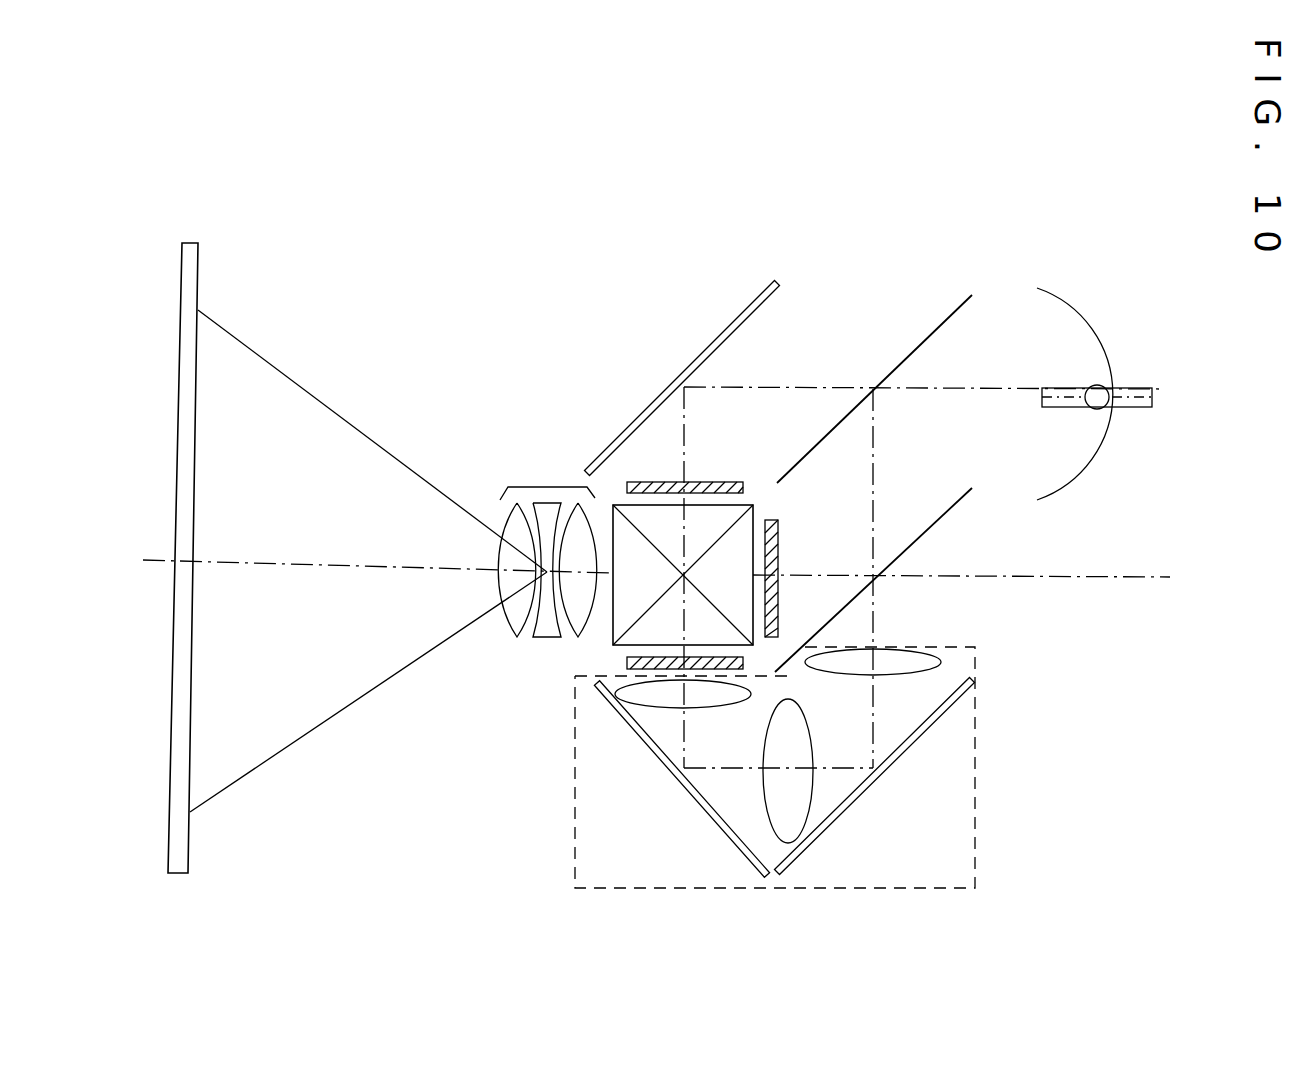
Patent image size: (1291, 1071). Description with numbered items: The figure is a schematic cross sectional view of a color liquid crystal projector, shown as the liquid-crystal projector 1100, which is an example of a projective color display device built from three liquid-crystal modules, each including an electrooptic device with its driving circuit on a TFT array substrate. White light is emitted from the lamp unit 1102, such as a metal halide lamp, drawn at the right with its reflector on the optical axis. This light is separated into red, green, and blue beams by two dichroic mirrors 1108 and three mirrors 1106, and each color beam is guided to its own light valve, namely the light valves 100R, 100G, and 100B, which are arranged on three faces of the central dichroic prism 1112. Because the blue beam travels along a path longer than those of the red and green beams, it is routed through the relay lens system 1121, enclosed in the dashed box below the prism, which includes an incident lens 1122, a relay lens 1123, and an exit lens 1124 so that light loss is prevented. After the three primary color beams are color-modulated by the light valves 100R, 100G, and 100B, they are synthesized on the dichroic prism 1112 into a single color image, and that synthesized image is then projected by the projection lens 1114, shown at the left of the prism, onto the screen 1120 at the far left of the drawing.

The liquid-crystal projector 1100 is at (1033, 215).
The lamp unit 1102 is at (1112, 440).
The mirrors 1106 is at (675, 383).
The dichroic mirrors 1108 is at (917, 347).
The dichroic prism 1112 is at (610, 623).
The projection lens 1114 is at (537, 487).
The screen 1120 is at (190, 777).
The relay lens system 1121 is at (975, 812).
The incident lens 1122 is at (913, 660).
The relay lens 1123 is at (800, 793).
The exit lens 1124 is at (647, 695).
The light valve for red 100R is at (660, 483).
The light valve for green 100G is at (770, 520).
The light valve for blue 100B is at (598, 662).